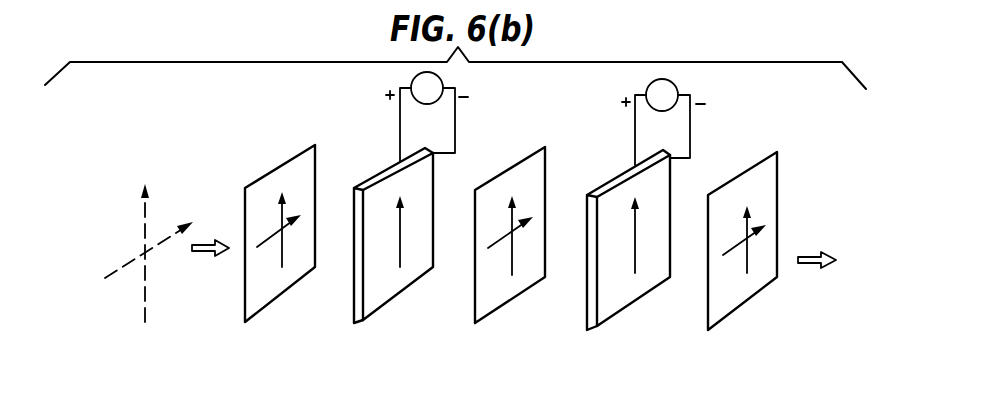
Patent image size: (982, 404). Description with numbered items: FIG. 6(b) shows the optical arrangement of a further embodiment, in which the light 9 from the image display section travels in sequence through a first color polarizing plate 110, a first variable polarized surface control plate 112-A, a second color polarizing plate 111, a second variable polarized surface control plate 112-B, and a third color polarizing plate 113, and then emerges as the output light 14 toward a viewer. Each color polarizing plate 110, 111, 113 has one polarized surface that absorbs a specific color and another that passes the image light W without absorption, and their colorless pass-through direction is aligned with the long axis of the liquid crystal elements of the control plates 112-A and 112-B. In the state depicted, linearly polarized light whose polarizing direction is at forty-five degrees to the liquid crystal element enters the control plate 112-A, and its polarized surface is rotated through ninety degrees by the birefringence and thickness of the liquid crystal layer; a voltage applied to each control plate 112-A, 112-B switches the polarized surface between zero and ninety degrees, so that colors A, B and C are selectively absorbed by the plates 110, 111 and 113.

The light 9 is at (204, 254).
The first color polarizing plate 110 is at (262, 313).
The first variable polarized surface control plate 112-A is at (377, 317).
The second color polarizing plate 111 is at (493, 315).
The second variable polarized surface control plate 112-B is at (618, 318).
The third color polarizing plate 113 is at (732, 317).
The output light beam 14 is at (810, 266).